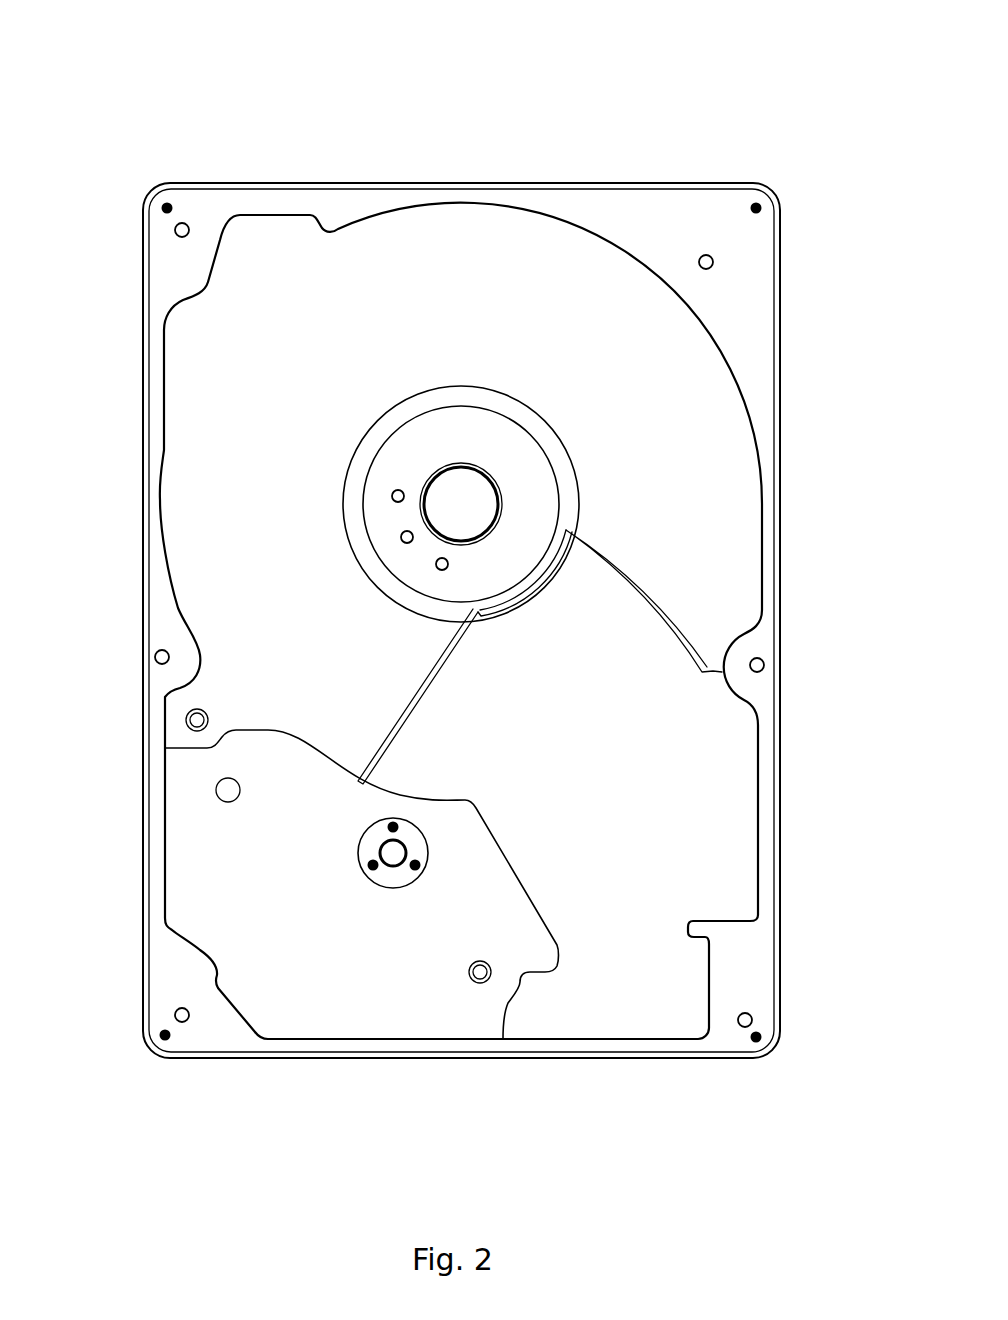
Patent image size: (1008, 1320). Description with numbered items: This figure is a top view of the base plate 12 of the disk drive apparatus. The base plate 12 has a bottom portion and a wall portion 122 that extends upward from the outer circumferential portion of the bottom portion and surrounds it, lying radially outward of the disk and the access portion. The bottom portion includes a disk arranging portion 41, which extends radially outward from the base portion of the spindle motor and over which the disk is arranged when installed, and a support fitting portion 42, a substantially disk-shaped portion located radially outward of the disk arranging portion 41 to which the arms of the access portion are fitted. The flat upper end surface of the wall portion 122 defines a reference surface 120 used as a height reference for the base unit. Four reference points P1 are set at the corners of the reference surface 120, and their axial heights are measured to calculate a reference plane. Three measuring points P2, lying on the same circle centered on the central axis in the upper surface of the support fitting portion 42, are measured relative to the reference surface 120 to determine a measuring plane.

The base plate 12 is at (708, 113).
The reference surface 120 is at (633, 217).
The wall portion 122 is at (339, 205).
The disk arranging portion 41 is at (693, 440).
The support fitting portion 42 is at (373, 852).
The reference points P1 is at (166, 204).
The measuring points P2 is at (392, 827).